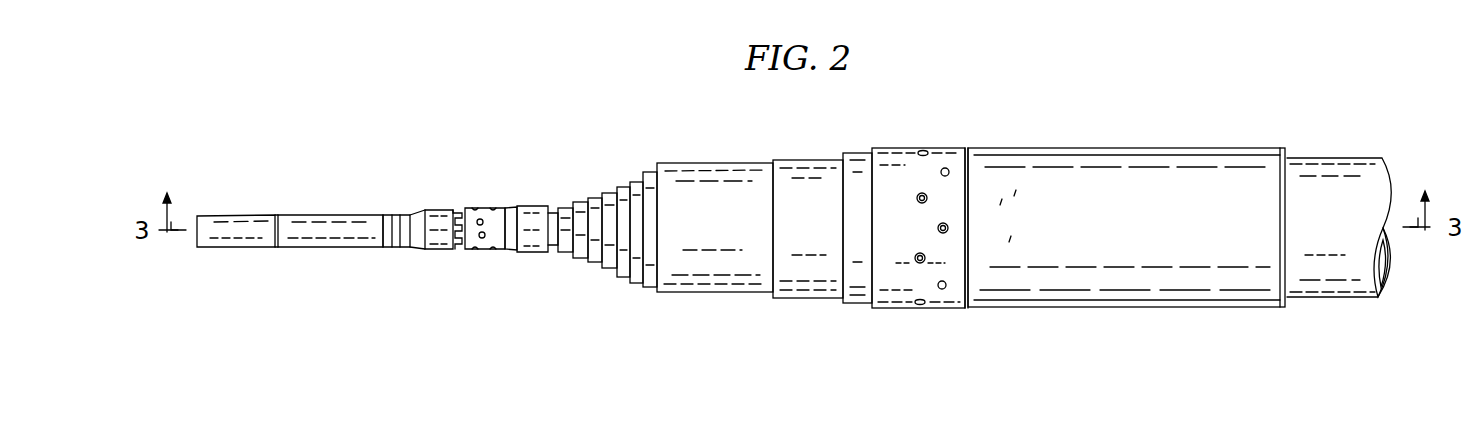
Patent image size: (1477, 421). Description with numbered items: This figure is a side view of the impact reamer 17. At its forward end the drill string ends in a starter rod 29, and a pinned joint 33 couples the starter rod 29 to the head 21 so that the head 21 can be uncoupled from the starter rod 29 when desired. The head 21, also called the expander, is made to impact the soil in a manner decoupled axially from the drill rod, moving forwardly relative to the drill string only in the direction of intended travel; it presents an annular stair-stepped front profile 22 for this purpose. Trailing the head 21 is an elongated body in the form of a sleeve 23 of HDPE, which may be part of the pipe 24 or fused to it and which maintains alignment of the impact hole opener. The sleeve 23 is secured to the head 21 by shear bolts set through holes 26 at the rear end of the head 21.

The impact reamer 17 is at (997, 111).
The head 21 is at (717, 178).
The annular stair-stepped front profile 22 is at (593, 263).
The sleeve 23 is at (1123, 160).
The pipe 24 is at (1333, 168).
The holes 26 is at (923, 151).
The starter rod 29 is at (332, 223).
The pinned joint 33 is at (482, 207).